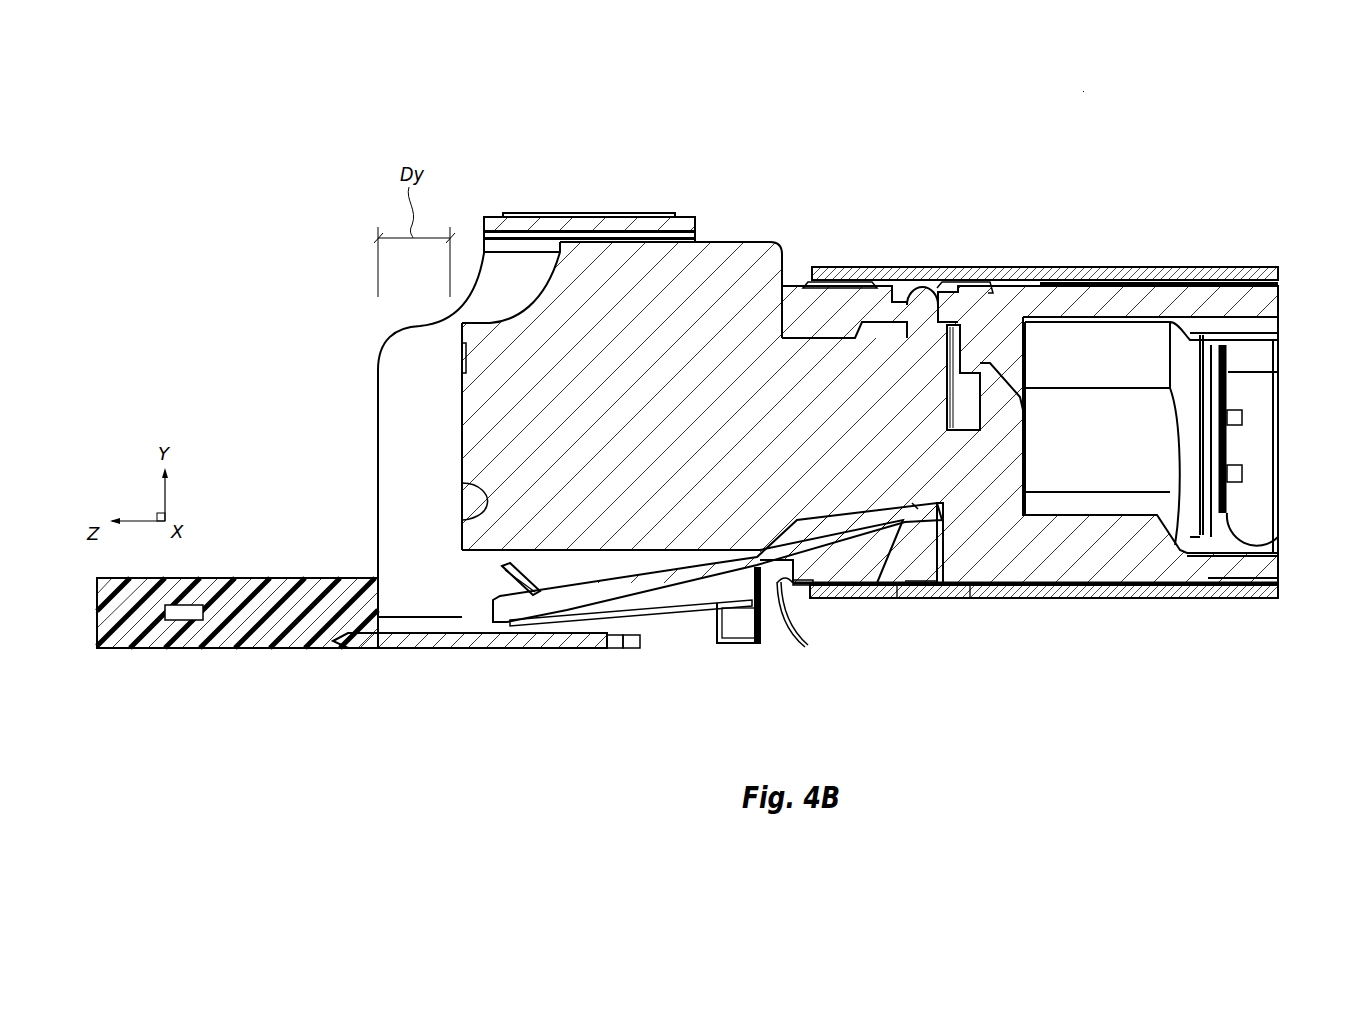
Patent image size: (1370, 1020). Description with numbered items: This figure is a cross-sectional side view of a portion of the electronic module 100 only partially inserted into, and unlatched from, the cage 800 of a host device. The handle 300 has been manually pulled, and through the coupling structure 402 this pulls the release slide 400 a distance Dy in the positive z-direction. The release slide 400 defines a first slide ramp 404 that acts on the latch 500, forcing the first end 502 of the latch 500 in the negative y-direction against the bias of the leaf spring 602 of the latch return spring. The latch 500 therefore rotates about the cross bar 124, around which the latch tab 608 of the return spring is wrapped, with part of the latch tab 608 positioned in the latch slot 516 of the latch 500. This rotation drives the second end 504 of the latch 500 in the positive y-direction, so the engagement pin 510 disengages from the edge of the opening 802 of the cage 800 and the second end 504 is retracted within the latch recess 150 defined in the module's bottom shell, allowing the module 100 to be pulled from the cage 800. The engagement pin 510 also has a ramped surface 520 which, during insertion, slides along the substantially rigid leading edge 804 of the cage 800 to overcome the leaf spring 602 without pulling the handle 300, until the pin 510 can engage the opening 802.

The electronic module 100 is at (1083, 92).
The cage 800 is at (1158, 268).
The release slide 400 is at (387, 405).
The coupling structure 402 is at (343, 640).
The handle 300 is at (232, 650).
The first end 502 is at (467, 640).
The first slide ramp 404 is at (510, 627).
The leaf spring 602 is at (550, 633).
The latch 500 is at (678, 614).
The latch slot 516 is at (712, 638).
The cross bar 124 is at (760, 623).
The latch tab 608 is at (770, 638).
The leading edge 804 is at (803, 590).
The engagement pin 510 is at (870, 597).
The ramped surface 520 is at (920, 597).
The opening 802 is at (940, 602).
The second end 504 is at (942, 530).
The latch recess 150 is at (917, 503).